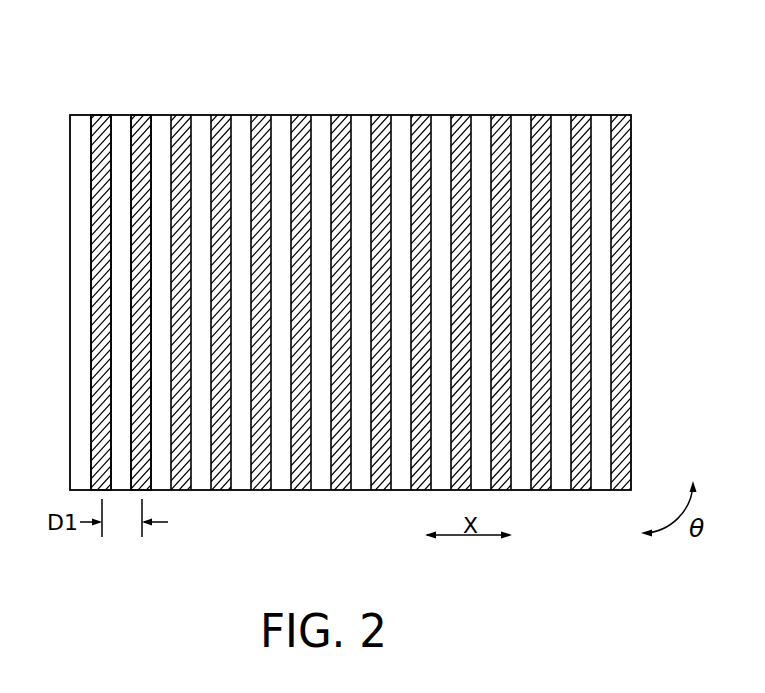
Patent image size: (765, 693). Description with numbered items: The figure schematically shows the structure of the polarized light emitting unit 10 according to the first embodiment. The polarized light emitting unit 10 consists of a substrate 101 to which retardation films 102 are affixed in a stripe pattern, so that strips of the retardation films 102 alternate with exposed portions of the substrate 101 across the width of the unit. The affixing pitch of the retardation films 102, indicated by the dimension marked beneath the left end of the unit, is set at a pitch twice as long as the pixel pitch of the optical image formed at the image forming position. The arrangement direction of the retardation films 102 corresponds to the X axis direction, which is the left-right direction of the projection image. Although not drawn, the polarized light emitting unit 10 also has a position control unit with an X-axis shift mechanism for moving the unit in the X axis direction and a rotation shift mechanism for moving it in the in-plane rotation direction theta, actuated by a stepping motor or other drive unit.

The polarized light emitting unit 10 is at (478, 113).
The substrate 101 is at (78, 120).
The retardation films 102 is at (100, 118).